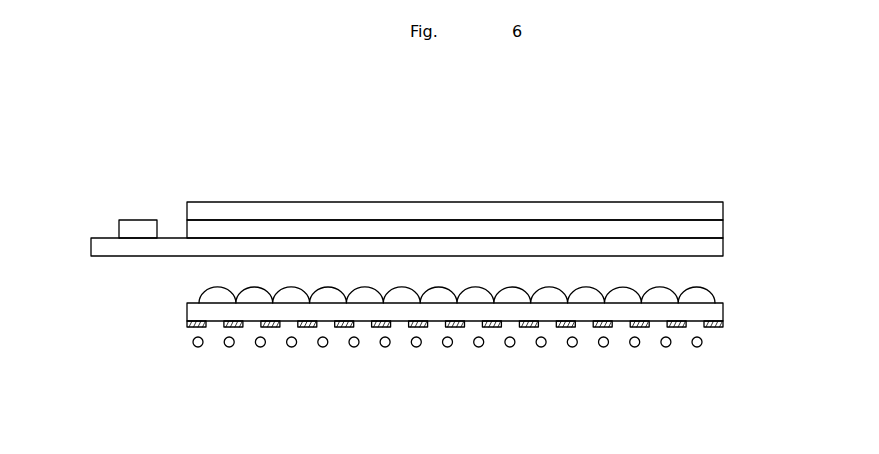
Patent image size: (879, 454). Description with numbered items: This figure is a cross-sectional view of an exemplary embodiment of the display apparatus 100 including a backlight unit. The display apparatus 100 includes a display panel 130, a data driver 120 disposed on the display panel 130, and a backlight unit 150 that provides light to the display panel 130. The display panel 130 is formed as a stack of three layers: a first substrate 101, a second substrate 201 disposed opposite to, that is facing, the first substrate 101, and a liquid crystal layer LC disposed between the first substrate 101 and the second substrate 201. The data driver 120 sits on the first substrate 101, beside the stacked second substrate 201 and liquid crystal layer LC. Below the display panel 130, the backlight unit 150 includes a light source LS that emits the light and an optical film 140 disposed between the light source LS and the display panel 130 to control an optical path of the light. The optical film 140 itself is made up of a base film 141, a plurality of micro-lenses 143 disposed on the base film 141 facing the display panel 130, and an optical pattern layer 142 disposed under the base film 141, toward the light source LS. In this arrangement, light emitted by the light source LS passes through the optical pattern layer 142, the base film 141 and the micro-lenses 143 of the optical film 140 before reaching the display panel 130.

The display apparatus 100 is at (728, 168).
The first substrate 101 is at (718, 246).
The data driver 120 is at (137, 228).
The display panel 130 is at (785, 198).
The second substrate 201 is at (716, 208).
The liquid crystal layer LC is at (716, 228).
The optical film 140 is at (787, 273).
The base film 141 is at (717, 312).
The optical pattern layer 142 is at (723, 323).
The micro-lenses 143 is at (708, 296).
The backlight unit 150 is at (832, 293).
The light source LS is at (703, 342).